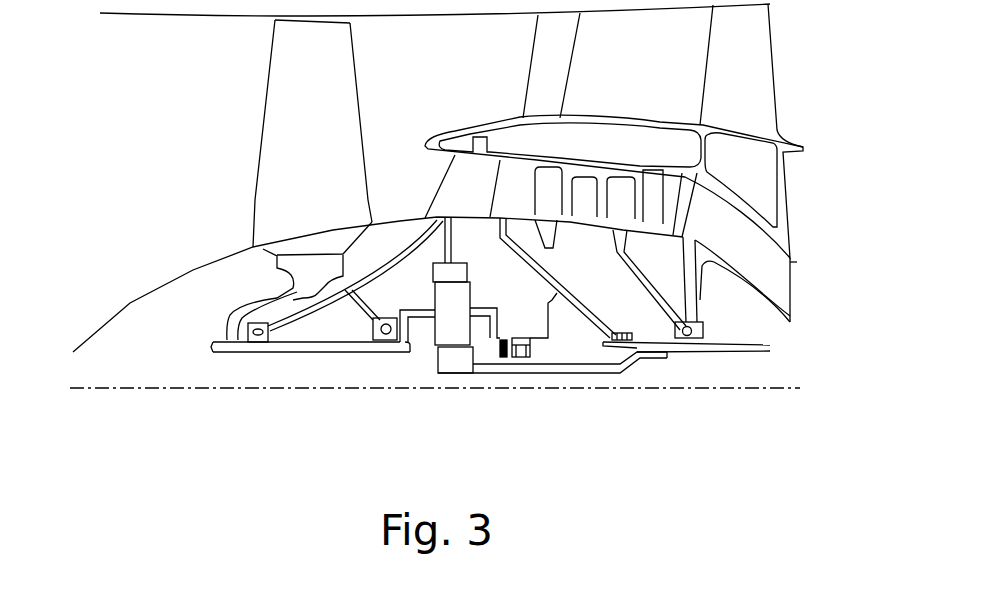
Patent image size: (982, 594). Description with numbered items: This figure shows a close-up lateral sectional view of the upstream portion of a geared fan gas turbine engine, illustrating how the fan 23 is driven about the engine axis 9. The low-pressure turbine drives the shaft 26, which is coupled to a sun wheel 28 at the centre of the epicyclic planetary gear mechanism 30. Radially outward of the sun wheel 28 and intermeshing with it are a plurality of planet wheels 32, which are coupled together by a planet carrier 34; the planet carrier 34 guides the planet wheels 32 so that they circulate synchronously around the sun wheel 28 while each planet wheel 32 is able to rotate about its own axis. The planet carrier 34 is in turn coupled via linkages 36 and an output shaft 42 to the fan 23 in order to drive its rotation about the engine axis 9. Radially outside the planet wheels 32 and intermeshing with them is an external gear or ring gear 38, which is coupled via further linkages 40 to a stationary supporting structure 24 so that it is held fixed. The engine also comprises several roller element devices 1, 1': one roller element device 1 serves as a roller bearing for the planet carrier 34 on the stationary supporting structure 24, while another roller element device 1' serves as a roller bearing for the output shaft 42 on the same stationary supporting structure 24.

The roller element device 1 is at (552, 416).
The roller element device 1' is at (299, 351).
The engine axis 9 is at (243, 390).
The fan 23 is at (278, 135).
The stationary supporting structure 24 is at (460, 183).
The shaft 26 is at (586, 373).
The sun wheel 28 is at (453, 360).
The epicyclic planetary gear mechanism 30 is at (393, 388).
The planet wheels 32 is at (442, 332).
The planet carrier 34 is at (493, 347).
The linkages 36 is at (408, 368).
The ring gear 38 is at (438, 275).
The linkages 40 is at (452, 250).
The output shaft 42 is at (308, 352).